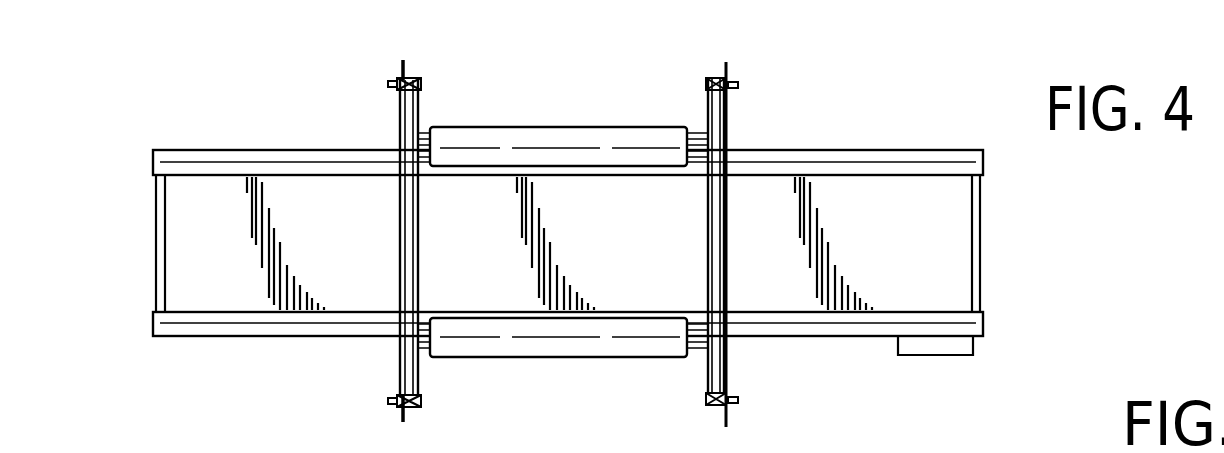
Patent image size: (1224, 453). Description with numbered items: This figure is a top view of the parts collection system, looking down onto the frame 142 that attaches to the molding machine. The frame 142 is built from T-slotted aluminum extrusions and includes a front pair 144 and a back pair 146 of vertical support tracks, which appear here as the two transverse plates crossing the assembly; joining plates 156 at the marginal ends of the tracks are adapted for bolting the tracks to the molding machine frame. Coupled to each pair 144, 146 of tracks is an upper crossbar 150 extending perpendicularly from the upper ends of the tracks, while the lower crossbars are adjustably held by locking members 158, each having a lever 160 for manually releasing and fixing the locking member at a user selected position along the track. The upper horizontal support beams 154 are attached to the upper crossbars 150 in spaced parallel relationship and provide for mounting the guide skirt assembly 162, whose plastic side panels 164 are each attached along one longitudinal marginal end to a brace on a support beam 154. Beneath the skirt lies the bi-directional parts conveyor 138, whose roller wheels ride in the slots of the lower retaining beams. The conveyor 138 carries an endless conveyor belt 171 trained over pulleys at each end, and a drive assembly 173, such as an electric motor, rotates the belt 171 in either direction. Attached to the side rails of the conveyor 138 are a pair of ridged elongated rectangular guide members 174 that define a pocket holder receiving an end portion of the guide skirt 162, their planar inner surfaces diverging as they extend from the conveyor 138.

The bi-directional parts conveyor 138 is at (990, 252).
The frame 142 is at (888, 112).
The front pair of vertical support tracks 144 is at (455, 100).
The back pair of vertical support tracks 146 is at (690, 92).
The upper crossbar 150 is at (400, 235).
The upper horizontal support beam 154 is at (698, 128).
The joining plate 156 is at (400, 71).
The locking member 158 is at (727, 378).
The lever 160 is at (390, 86).
The guide skirt assembly 162 is at (563, 362).
The side panel 164 is at (550, 140).
The endless conveyor belt 171 is at (907, 247).
The drive assembly 173 is at (918, 345).
The guide member 174 is at (963, 180).